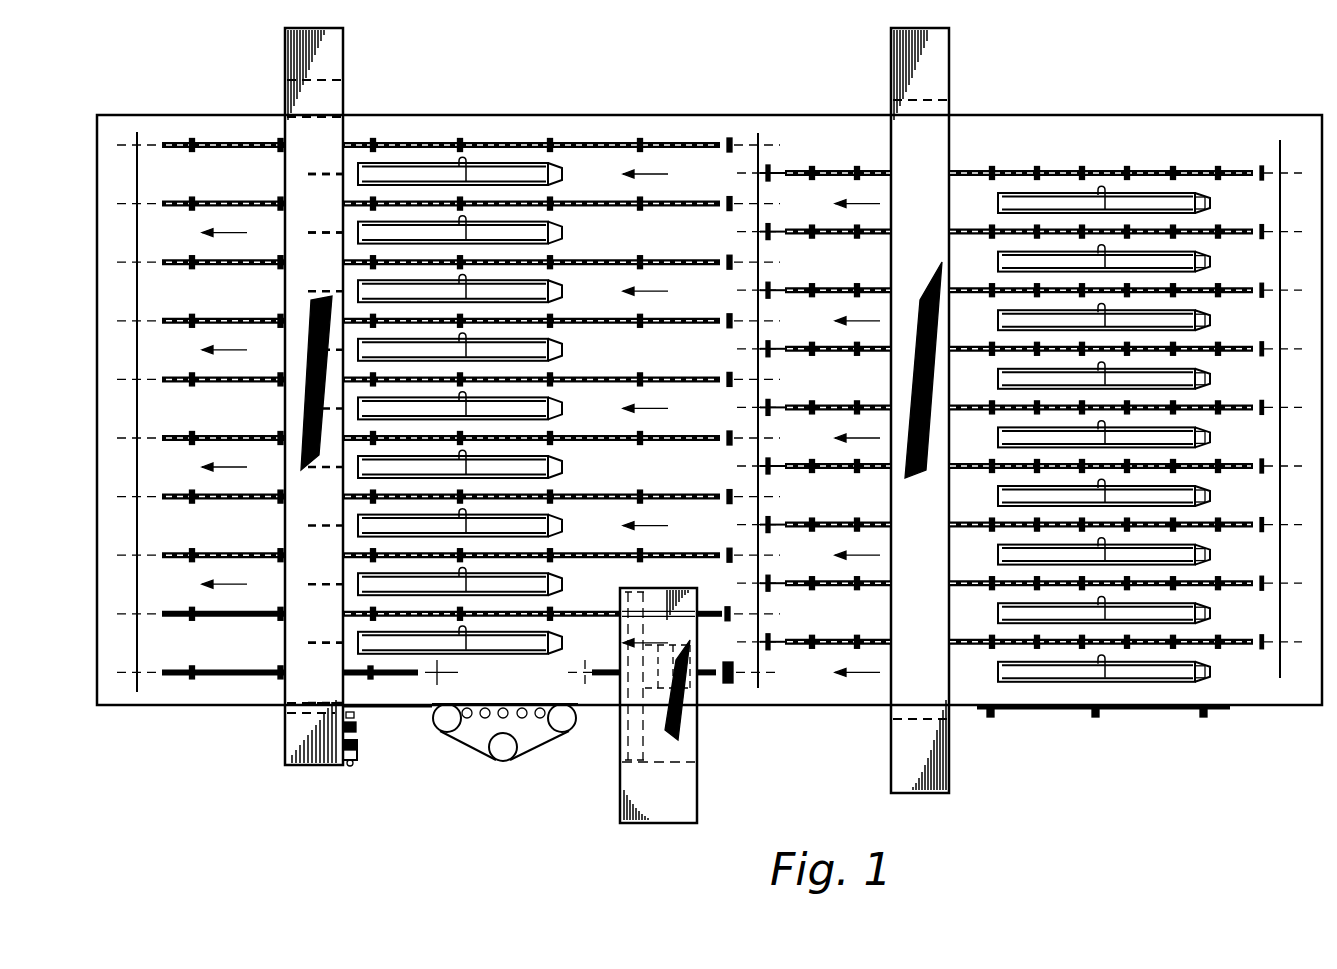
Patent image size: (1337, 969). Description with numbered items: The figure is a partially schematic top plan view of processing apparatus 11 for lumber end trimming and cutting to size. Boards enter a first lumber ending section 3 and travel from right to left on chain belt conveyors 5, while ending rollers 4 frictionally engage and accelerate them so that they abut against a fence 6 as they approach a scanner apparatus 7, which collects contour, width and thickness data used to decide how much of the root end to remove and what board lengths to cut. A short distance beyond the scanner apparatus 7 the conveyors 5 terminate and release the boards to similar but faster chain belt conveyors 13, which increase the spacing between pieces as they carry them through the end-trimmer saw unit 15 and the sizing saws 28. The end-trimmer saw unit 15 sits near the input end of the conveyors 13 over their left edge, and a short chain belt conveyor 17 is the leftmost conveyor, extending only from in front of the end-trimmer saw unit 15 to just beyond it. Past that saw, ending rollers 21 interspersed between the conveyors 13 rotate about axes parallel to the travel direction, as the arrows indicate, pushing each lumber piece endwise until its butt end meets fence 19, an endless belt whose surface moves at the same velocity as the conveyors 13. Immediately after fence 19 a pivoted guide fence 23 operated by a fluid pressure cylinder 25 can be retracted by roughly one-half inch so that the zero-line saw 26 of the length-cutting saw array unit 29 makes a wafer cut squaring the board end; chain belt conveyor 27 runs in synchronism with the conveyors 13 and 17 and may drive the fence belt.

The first lumber ending section 3 is at (1107, 115).
The ending rollers 4 is at (1207, 197).
The chain belt conveyors 5 is at (1228, 170).
The fence 6 is at (1135, 712).
The scanner apparatus 7 is at (890, 742).
The processing apparatus 11 is at (672, 114).
The chain belt conveyors 13 is at (575, 143).
The end-trimmer saw unit 15 is at (697, 739).
The short chain belt conveyor 17 is at (612, 671).
The fence 19 is at (490, 705).
The ending rollers 21 is at (556, 170).
The pivoted guide fence 23 is at (378, 709).
The fluid pressure cylinder 25 is at (360, 745).
The zero-line saw 26 is at (330, 700).
The chain belt conveyor 27 is at (385, 677).
The sizing saws 28 is at (333, 170).
The length-cutting saw array unit 29 is at (282, 731).